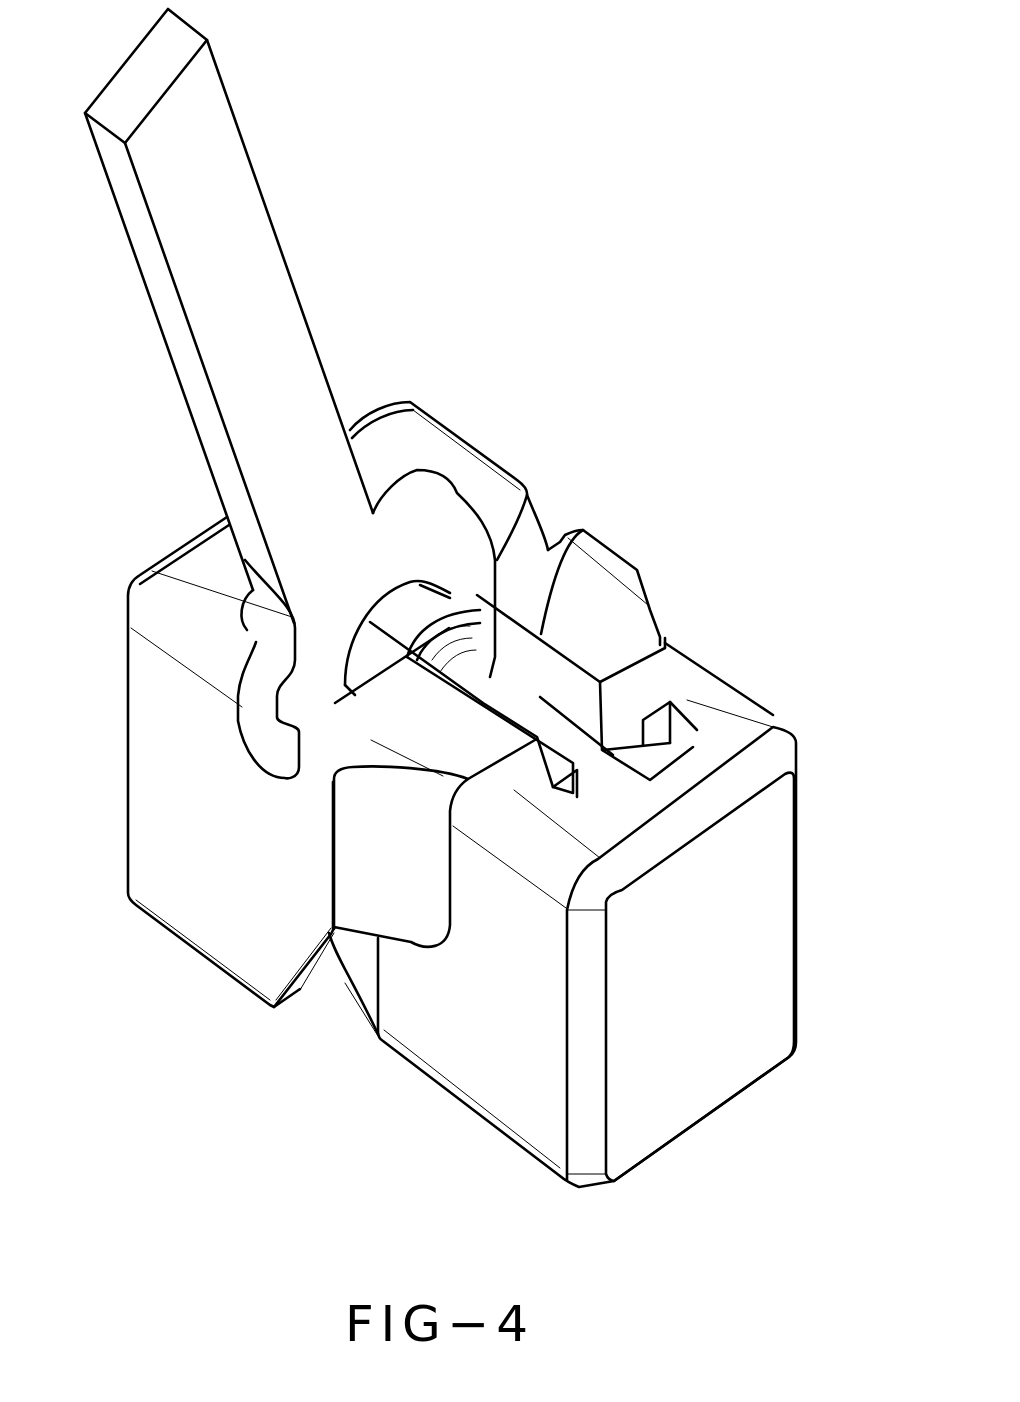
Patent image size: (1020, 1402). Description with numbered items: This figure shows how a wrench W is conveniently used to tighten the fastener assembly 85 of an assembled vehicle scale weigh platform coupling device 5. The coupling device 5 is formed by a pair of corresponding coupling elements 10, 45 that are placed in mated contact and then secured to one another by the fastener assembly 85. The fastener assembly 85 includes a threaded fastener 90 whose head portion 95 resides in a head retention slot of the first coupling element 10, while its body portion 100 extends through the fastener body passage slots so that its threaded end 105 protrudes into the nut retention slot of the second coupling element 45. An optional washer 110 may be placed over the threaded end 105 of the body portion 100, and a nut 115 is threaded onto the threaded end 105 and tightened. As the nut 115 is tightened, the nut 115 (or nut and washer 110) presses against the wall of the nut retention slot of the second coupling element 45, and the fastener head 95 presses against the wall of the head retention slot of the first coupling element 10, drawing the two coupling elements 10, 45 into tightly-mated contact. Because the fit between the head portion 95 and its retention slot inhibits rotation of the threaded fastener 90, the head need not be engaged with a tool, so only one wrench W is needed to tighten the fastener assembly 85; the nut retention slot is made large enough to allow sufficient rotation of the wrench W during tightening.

The wrench W is at (223, 173).
The vehicle scale weigh platform coupling device 5 is at (696, 199).
The first coupling element 10 is at (703, 1070).
The second coupling element 45 is at (158, 952).
The fastener assembly 85 is at (590, 615).
The threaded fastener 90 is at (580, 692).
The head portion 95 is at (662, 762).
The body portion 100 is at (582, 748).
The threaded end 105 is at (567, 557).
The washer 110 is at (480, 627).
The nut 115 is at (400, 610).